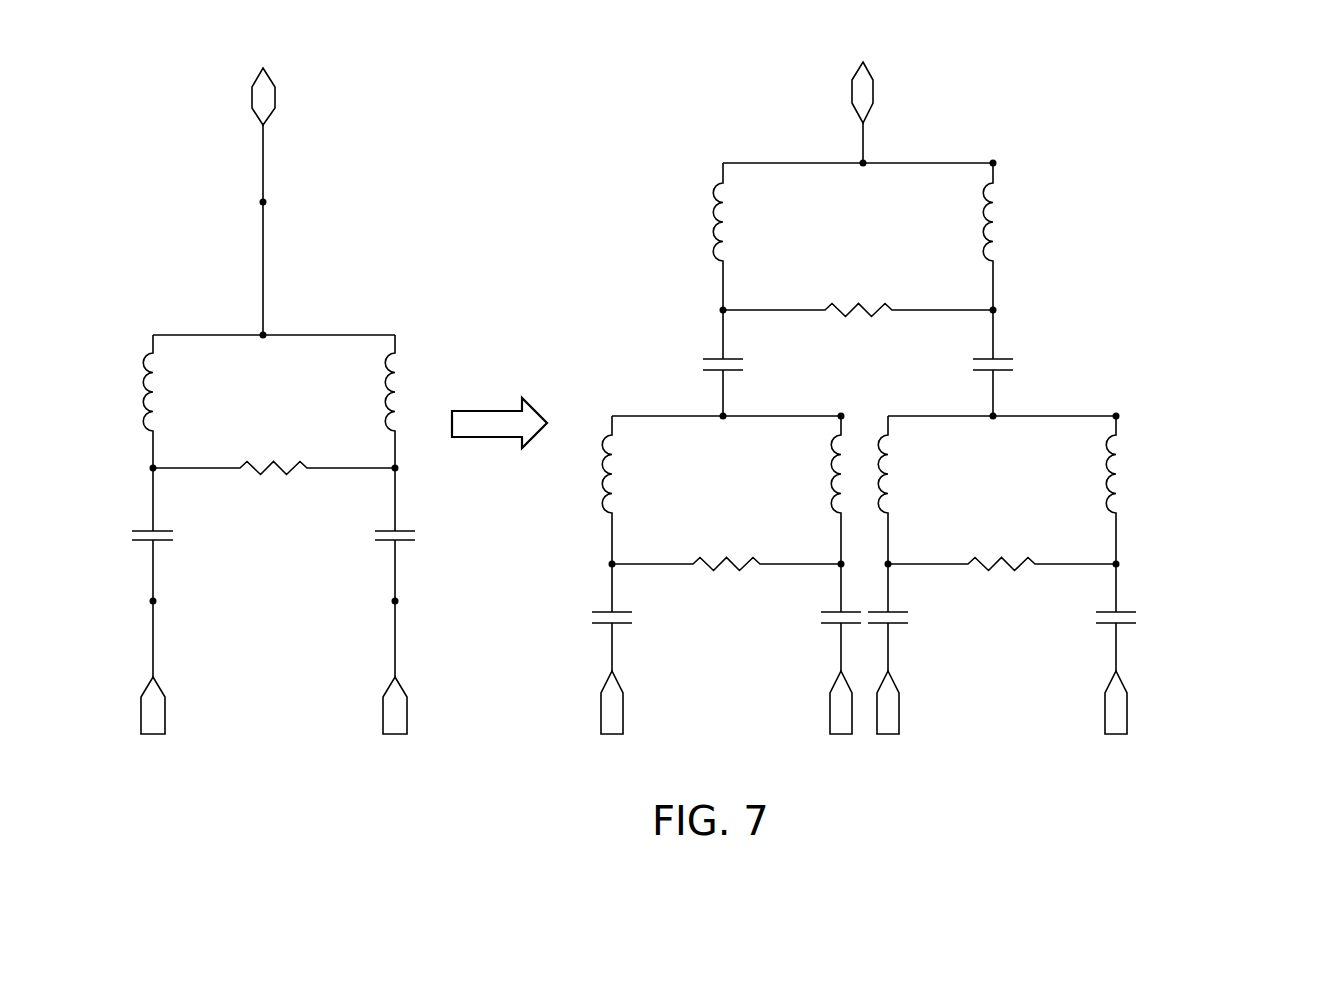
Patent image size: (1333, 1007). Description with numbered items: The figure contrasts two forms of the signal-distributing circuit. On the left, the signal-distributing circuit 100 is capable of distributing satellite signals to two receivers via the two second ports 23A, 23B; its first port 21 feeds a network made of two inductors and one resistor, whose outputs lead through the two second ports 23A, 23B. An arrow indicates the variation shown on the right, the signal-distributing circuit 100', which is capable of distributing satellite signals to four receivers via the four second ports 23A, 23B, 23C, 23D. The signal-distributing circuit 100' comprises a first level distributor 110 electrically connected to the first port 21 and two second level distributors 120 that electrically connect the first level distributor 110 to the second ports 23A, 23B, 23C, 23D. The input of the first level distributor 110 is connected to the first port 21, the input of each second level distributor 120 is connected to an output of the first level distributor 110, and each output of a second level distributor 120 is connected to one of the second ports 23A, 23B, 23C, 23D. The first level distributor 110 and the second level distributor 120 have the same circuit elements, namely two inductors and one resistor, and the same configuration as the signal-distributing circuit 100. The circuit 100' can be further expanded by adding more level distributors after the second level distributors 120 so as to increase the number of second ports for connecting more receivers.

The first port 21 is at (274, 78).
The signal-distributing circuit 100 is at (307, 401).
The signal-distributing circuit 100' is at (949, 397).
The first level distributor 110 is at (1047, 297).
The second level distributor 120 is at (1050, 542).
The second port 23A is at (165, 714).
The second port 23B is at (383, 714).
The second port 23C is at (899, 714).
The second port 23D is at (1105, 714).